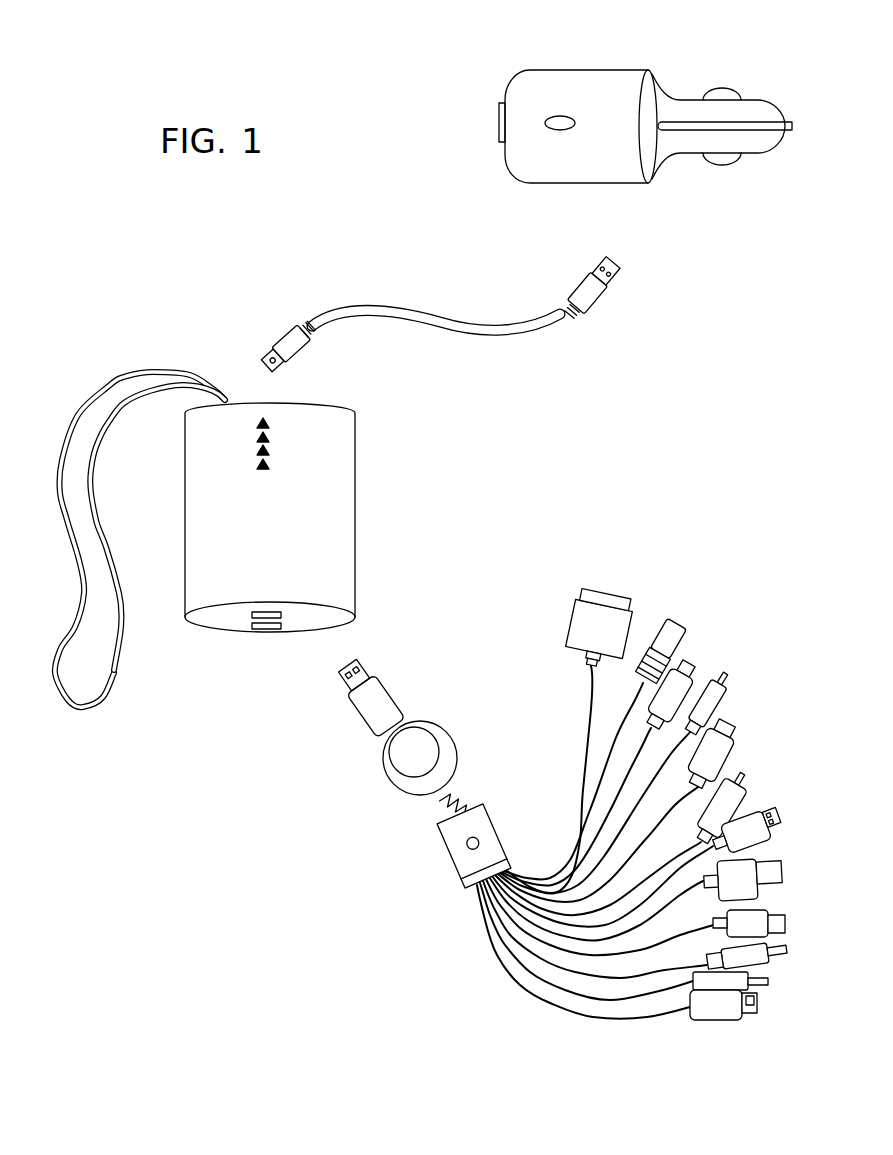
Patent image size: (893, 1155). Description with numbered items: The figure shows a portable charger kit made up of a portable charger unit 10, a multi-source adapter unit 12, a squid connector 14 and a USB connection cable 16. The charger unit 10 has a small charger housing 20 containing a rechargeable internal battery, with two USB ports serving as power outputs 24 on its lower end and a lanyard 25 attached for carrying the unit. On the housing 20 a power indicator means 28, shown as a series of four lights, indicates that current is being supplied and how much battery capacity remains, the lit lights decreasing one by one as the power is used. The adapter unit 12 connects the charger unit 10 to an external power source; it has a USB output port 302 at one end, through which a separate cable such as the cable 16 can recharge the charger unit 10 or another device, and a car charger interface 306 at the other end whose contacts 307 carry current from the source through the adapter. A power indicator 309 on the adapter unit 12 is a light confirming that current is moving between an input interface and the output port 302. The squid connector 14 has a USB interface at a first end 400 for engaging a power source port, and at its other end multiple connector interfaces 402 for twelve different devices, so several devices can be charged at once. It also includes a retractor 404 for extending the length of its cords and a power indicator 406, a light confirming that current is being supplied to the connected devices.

The portable charger unit 10 is at (392, 491).
The adapter unit 12 is at (560, 76).
The squid connector 14 is at (420, 940).
The USB connection cable 16 is at (480, 328).
The charger housing 20 is at (214, 564).
The power output 24 is at (264, 650).
The lanyard 25 is at (113, 673).
The power indicator means 28 is at (290, 448).
The output port 302 is at (474, 130).
The car charger interface 306 is at (788, 90).
The contacts 307 is at (724, 92).
The power indicator 309 is at (551, 140).
The first end 400 is at (386, 656).
The connector interfaces 402 is at (824, 1016).
The retractor 404 is at (443, 730).
The power indicator 406 is at (468, 848).